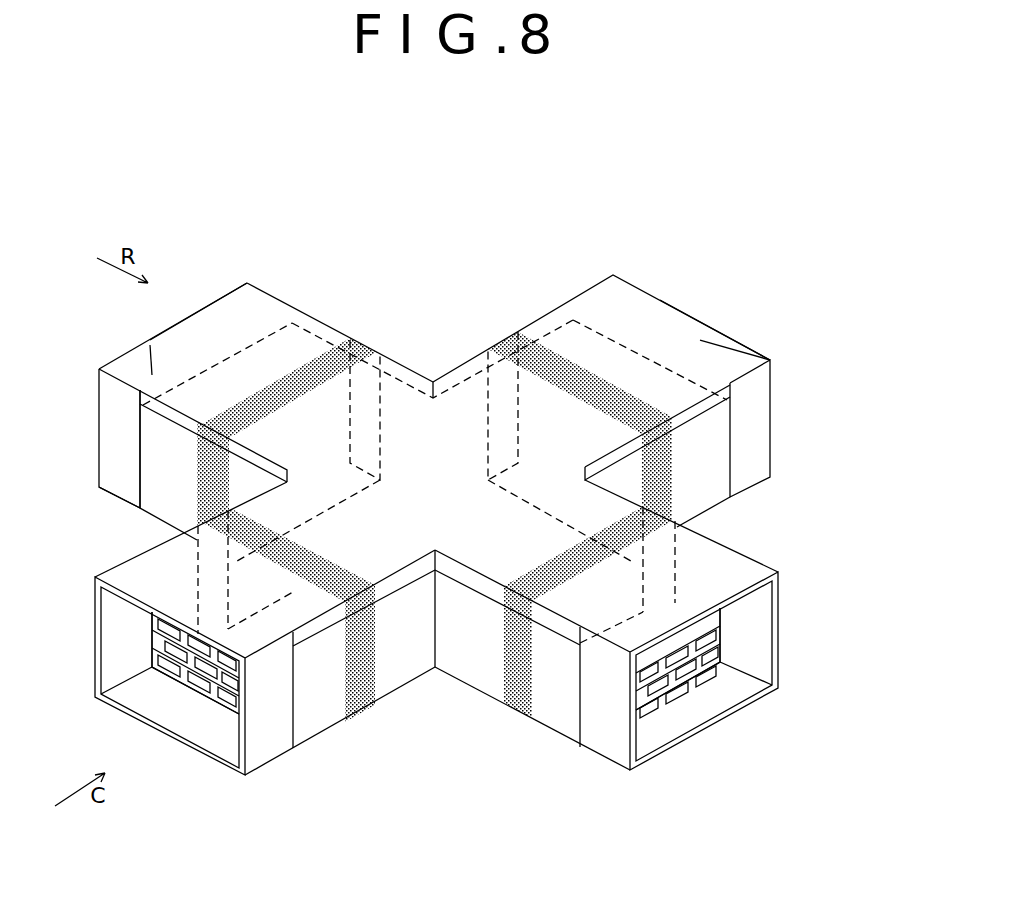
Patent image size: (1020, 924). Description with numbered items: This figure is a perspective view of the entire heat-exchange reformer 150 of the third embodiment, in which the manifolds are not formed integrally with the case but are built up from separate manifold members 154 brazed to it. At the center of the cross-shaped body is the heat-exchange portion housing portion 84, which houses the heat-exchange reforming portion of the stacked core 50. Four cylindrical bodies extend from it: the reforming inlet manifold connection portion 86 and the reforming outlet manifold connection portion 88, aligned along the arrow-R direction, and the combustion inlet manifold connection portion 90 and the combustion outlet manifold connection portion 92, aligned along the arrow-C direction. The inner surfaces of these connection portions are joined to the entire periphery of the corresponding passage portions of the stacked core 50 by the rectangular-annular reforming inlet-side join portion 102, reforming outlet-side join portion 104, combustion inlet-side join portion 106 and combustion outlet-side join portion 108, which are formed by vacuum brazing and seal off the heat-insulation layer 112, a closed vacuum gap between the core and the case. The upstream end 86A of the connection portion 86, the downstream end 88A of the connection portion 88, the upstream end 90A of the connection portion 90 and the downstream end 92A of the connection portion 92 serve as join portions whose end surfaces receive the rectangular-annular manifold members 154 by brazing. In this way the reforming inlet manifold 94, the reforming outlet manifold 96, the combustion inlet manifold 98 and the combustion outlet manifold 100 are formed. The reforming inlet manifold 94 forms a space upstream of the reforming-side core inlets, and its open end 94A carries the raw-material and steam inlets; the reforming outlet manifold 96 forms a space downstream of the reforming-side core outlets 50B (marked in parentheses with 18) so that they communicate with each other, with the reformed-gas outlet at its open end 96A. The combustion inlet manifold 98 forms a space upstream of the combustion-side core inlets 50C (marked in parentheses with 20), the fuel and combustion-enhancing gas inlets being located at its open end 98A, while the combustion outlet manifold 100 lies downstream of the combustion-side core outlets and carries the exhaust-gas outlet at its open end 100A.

The heat-exchange reformer 150 is at (500, 192).
The heat-exchange portion housing portion 84 is at (428, 448).
The reforming inlet manifold connection portion 86 is at (316, 340).
The upstream end 86A is at (138, 440).
The reforming outlet manifold connection portion 88 is at (690, 525).
The downstream end 88A is at (590, 705).
The combustion inlet manifold connection portion 90 is at (418, 670).
The upstream end 90A is at (185, 572).
The combustion outlet manifold connection portion 92 is at (618, 322).
The downstream end 92A is at (698, 332).
The reforming inlet manifold 94 is at (248, 300).
The open end 94A is at (205, 306).
The reforming outlet manifold 96 is at (725, 560).
The open end 96A is at (778, 612).
The combustion inlet manifold 98 is at (137, 700).
The open end 98A is at (180, 735).
The combustion outlet manifold 100 is at (752, 393).
The open end 100A is at (708, 330).
The reforming inlet-side join portion 102 is at (291, 362).
The reforming outlet-side join portion 104 is at (535, 548).
The combustion inlet-side join portion 106 is at (347, 556).
The combustion outlet-side join portion 108 is at (533, 343).
The heat-insulation layer 112 is at (475, 545).
The manifold member 154 is at (152, 360).
The stacked core 50 is at (670, 700).
The reforming-side core outlets 50B is at (707, 615).
The combustion-side core inlets 50C is at (197, 693).
The second connector 18 is at (758, 785).
The third connector 20 is at (212, 886).